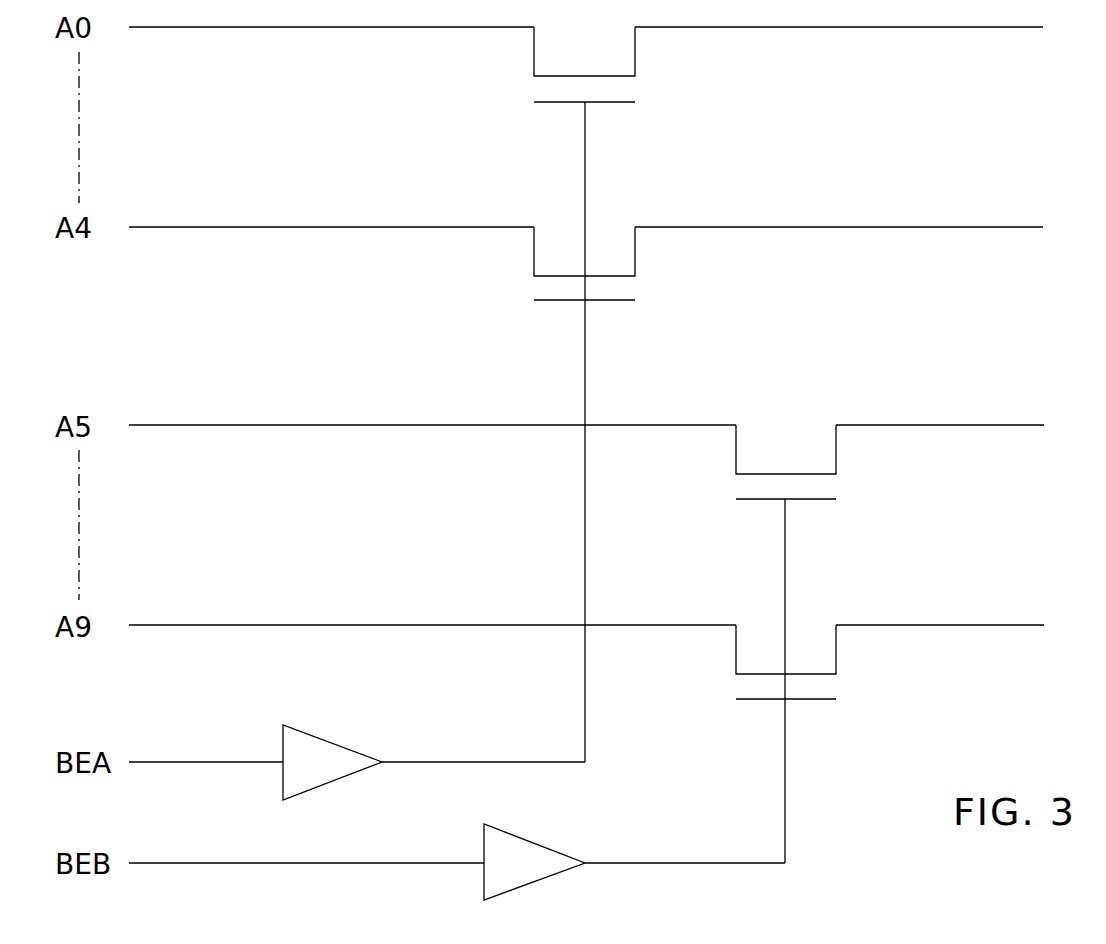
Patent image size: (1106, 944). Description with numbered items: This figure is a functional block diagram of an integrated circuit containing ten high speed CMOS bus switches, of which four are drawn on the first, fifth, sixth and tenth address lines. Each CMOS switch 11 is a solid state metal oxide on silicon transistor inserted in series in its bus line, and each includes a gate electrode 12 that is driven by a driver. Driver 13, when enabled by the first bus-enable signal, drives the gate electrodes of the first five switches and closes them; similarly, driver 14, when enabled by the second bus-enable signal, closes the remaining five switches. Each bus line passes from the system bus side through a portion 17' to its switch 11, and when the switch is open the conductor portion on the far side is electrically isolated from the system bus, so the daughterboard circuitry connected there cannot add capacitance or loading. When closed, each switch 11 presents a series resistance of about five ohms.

The CMOS switch 11 is at (636, 42).
The gate electrode 12 is at (570, 104).
The driver 13 is at (339, 746).
The driver 14 is at (543, 845).
The portion of bus extension 17' is at (839, 360).